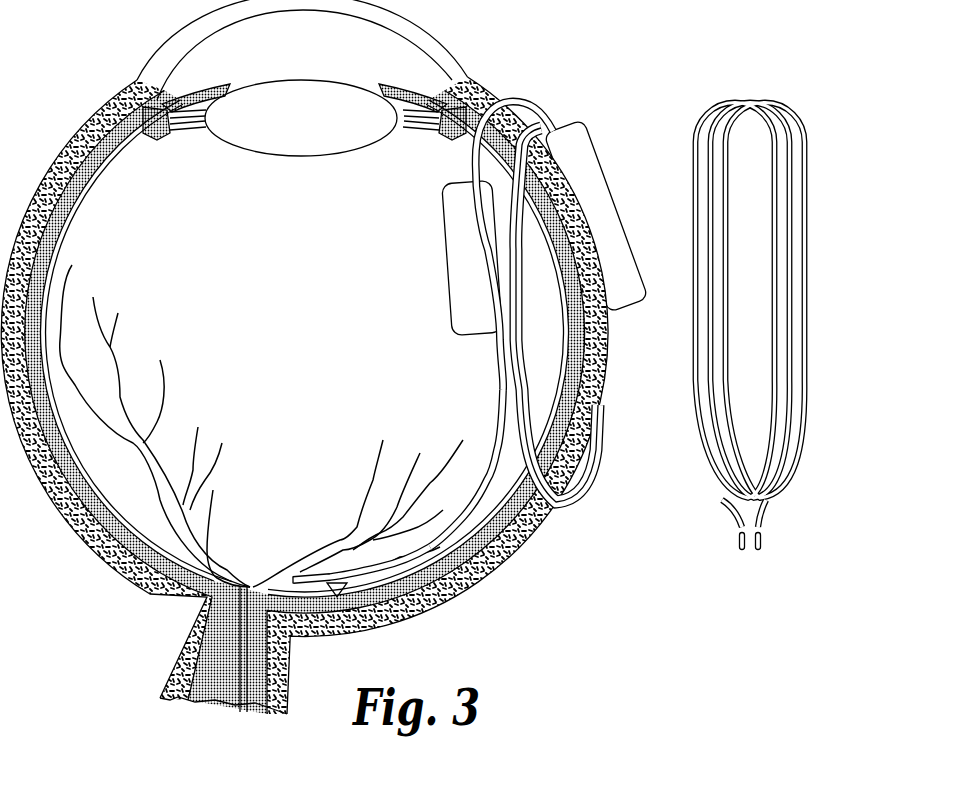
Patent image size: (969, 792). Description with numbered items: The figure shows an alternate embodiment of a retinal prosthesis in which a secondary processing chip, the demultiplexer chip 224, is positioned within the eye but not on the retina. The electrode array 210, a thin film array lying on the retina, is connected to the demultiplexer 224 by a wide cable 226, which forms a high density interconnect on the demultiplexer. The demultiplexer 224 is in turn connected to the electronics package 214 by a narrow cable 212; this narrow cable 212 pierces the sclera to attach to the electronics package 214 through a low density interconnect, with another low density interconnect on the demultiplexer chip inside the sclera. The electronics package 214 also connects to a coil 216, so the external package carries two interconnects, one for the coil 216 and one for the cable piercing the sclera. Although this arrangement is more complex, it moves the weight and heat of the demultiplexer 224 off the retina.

The electrode array 210 is at (335, 579).
The narrow cable 212 is at (472, 158).
The electronics package 214 is at (592, 143).
The coil 216 is at (594, 468).
The demultiplexer chip 224 is at (448, 275).
The wide cable 226 is at (503, 430).